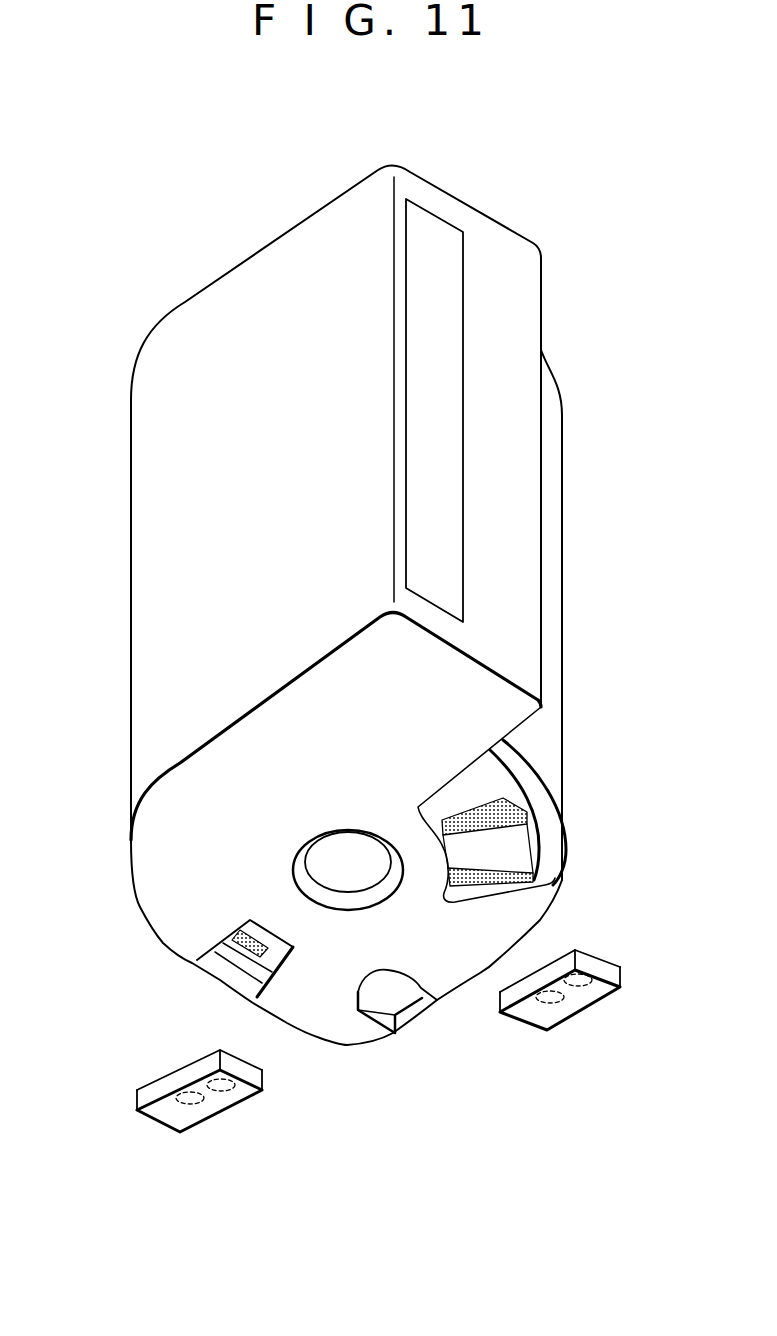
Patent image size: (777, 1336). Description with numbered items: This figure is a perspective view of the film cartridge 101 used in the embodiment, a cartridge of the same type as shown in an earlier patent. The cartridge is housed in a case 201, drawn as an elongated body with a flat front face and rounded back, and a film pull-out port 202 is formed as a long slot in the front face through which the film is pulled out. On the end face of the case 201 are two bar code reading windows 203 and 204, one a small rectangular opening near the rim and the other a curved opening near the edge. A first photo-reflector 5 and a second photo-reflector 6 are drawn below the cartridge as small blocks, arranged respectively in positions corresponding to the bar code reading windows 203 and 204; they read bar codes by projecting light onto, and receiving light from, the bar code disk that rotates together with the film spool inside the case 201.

The film cartridge 101 is at (335, 646).
The case 201 is at (360, 1033).
The film pull-out port 202 is at (463, 527).
The bar code reading window 203 is at (212, 968).
The bar code reading window 204 is at (460, 776).
The first photo-reflector 5 is at (222, 1105).
The second photo-reflector 6 is at (575, 1005).